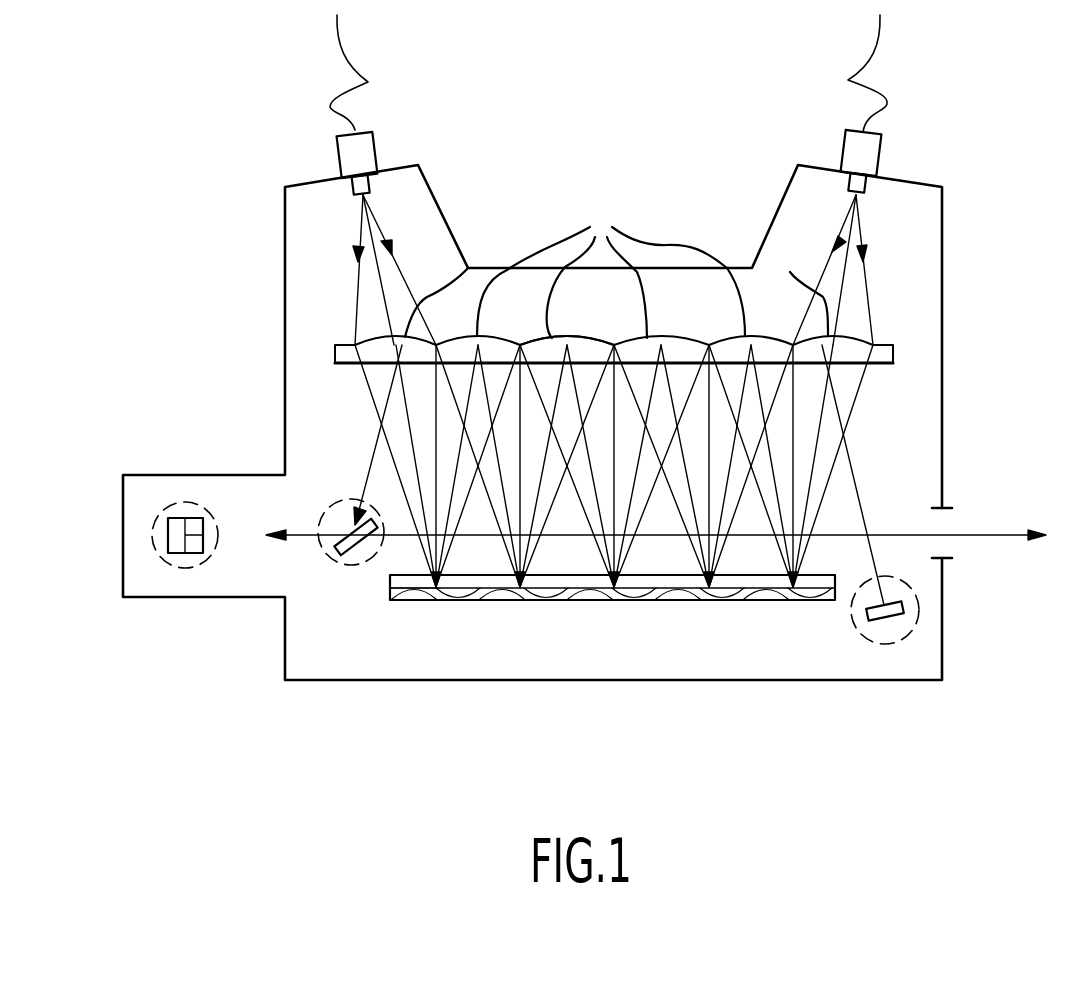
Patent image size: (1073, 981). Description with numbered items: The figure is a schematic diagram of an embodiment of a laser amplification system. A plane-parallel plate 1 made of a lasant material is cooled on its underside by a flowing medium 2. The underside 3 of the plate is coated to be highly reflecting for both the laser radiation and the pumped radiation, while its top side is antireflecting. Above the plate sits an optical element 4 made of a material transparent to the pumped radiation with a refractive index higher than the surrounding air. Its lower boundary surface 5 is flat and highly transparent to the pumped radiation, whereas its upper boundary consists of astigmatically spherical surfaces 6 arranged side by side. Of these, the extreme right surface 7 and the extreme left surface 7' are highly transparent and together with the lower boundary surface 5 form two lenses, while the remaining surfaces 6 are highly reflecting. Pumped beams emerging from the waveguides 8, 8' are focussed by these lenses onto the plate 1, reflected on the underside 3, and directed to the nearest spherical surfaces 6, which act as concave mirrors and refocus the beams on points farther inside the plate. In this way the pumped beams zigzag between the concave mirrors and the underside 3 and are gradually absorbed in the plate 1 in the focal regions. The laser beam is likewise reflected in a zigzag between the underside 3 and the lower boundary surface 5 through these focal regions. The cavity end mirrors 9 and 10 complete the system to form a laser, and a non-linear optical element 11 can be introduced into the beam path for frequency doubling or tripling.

The plane-parallel plate 1 is at (675, 583).
The flowing medium 2 is at (475, 601).
The underside 3 is at (583, 601).
The optical element 4 is at (570, 339).
The lower boundary surface 5 is at (665, 356).
The astigmatically spherical surfaces 6 is at (611, 270).
The extreme right surface 7 is at (802, 289).
The extreme left surface 7' is at (450, 269).
The waveguide 8 is at (823, 104).
The waveguide 8' is at (383, 105).
The cavity end mirror 9 is at (341, 556).
The cavity end mirror 10 is at (882, 625).
The non-linear optical element 11 is at (178, 554).